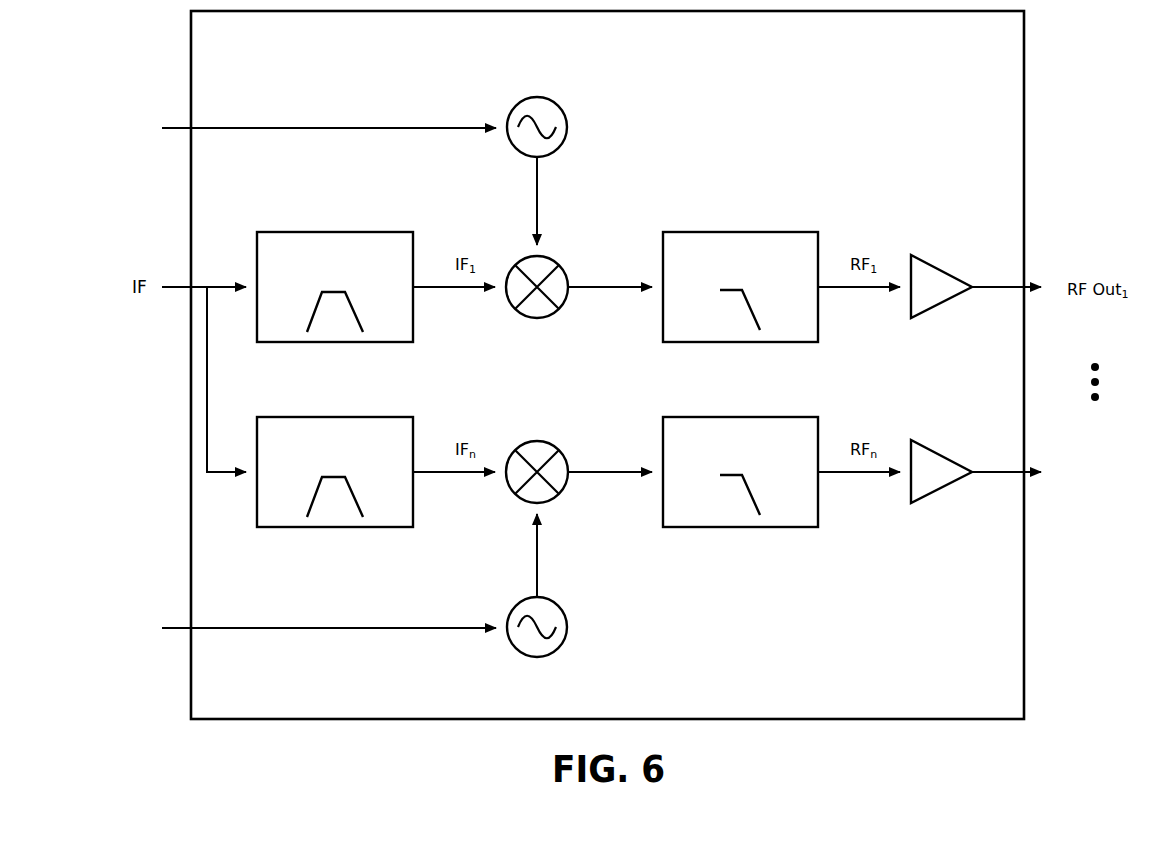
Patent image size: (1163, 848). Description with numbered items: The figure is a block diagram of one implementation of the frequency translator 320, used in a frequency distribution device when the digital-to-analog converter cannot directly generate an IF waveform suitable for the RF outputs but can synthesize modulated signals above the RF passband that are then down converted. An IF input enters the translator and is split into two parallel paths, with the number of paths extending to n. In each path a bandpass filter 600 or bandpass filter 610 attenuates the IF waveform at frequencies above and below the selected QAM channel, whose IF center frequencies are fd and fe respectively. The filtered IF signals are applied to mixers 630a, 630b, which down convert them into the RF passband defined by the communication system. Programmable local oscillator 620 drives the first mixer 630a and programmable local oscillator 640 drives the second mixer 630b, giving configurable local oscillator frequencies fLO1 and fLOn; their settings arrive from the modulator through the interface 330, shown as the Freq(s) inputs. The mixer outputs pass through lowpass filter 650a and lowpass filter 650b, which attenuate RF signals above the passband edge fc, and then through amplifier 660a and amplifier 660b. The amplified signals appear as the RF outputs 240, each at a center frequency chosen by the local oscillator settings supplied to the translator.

The frequency translator 320 is at (607, 365).
The interface 330 is at (307, 130).
The bandpass filter 600 is at (336, 232).
The bandpass filter 610 is at (336, 417).
The programmable local oscillator 620 is at (553, 154).
The mixer 630a is at (539, 319).
The mixer 630b is at (540, 441).
The programmable local oscillator 640 is at (553, 600).
The lowpass filter 650a is at (740, 232).
The lowpass filter 650b is at (740, 417).
The amplifier 660a is at (938, 267).
The amplifier 660b is at (938, 447).
The RF outputs 240 is at (1104, 483).